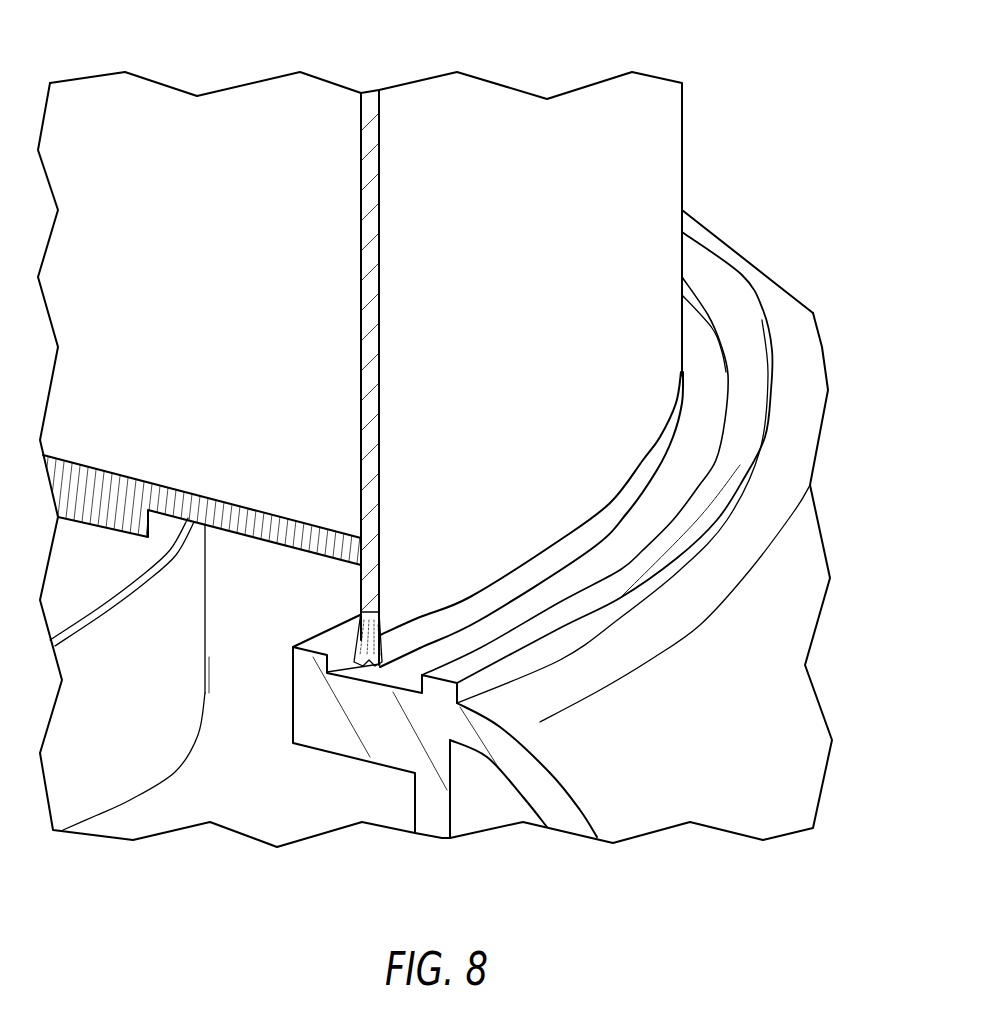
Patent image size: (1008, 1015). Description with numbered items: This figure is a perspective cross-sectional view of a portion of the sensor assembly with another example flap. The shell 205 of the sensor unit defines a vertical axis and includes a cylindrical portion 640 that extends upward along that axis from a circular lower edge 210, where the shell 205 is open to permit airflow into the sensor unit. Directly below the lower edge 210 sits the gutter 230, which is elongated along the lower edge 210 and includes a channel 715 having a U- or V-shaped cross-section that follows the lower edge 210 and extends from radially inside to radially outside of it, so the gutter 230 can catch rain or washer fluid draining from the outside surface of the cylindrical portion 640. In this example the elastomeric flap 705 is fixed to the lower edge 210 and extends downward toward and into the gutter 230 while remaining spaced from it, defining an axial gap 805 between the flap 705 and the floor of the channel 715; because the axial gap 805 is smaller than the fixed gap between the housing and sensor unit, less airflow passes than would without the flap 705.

The shell 205 is at (702, 102).
The cylindrical portion 640 is at (648, 177).
The channel 715 is at (698, 348).
The flap 705 is at (660, 453).
The lower edge 210 is at (363, 627).
The axial gap 805 is at (360, 677).
The gutter 230 is at (385, 730).